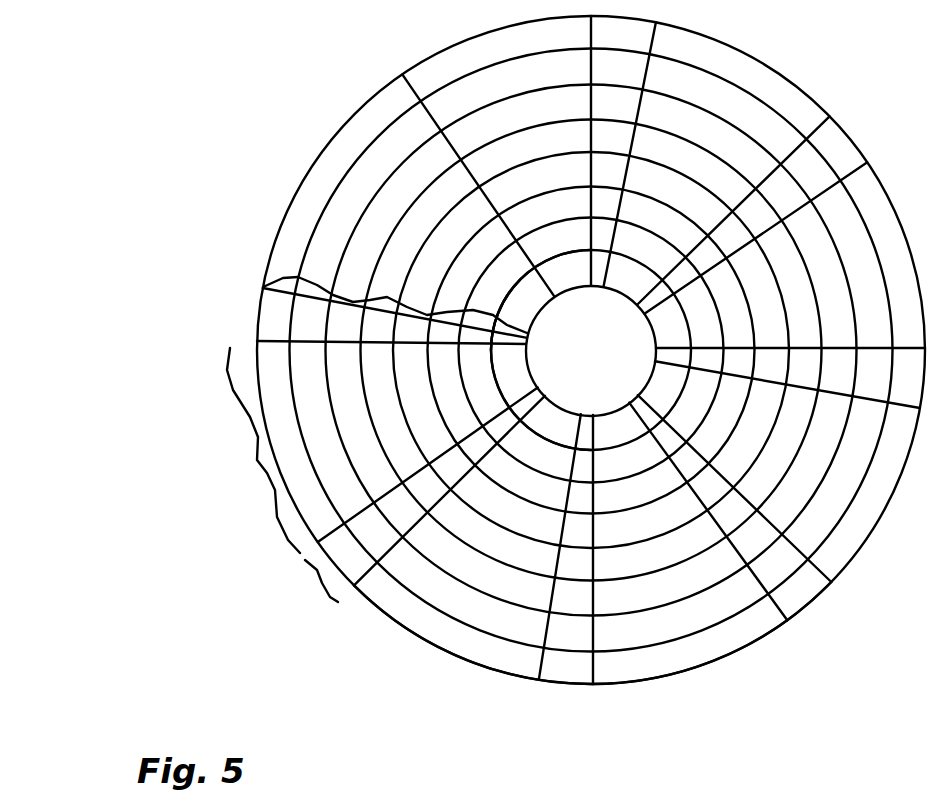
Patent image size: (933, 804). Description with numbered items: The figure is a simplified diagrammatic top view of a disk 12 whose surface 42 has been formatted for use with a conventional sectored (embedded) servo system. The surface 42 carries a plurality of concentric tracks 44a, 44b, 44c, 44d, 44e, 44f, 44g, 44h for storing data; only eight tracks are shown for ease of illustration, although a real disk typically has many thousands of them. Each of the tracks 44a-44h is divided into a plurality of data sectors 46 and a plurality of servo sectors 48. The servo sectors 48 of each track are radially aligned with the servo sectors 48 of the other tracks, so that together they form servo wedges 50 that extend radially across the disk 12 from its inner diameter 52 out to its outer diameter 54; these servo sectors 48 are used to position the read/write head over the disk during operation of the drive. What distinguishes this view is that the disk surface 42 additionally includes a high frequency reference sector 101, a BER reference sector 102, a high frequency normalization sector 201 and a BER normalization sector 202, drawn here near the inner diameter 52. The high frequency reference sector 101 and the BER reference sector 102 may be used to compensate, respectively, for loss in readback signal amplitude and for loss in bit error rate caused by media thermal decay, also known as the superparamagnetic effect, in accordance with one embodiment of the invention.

The disk 12 is at (308, 167).
The surface 42 is at (515, 91).
The concentric track 44a is at (763, 628).
The concentric track 44b is at (703, 613).
The concentric track 44c is at (652, 598).
The concentric track 44d is at (610, 570).
The concentric track 44e is at (685, 192).
The concentric track 44f is at (742, 315).
The concentric track 44g is at (697, 405).
The concentric track 44h is at (617, 430).
The data sector 46 is at (255, 462).
The servo sector 48 is at (320, 582).
The servo wedge 50 is at (387, 297).
The inner diameter 52 is at (532, 376).
The outer diameter 54 is at (410, 633).
The high frequency reference sector 101 is at (508, 385).
The BER reference sector 102 is at (555, 430).
The high frequency normalization sector 201 is at (541, 300).
The BER normalization sector 202 is at (513, 315).